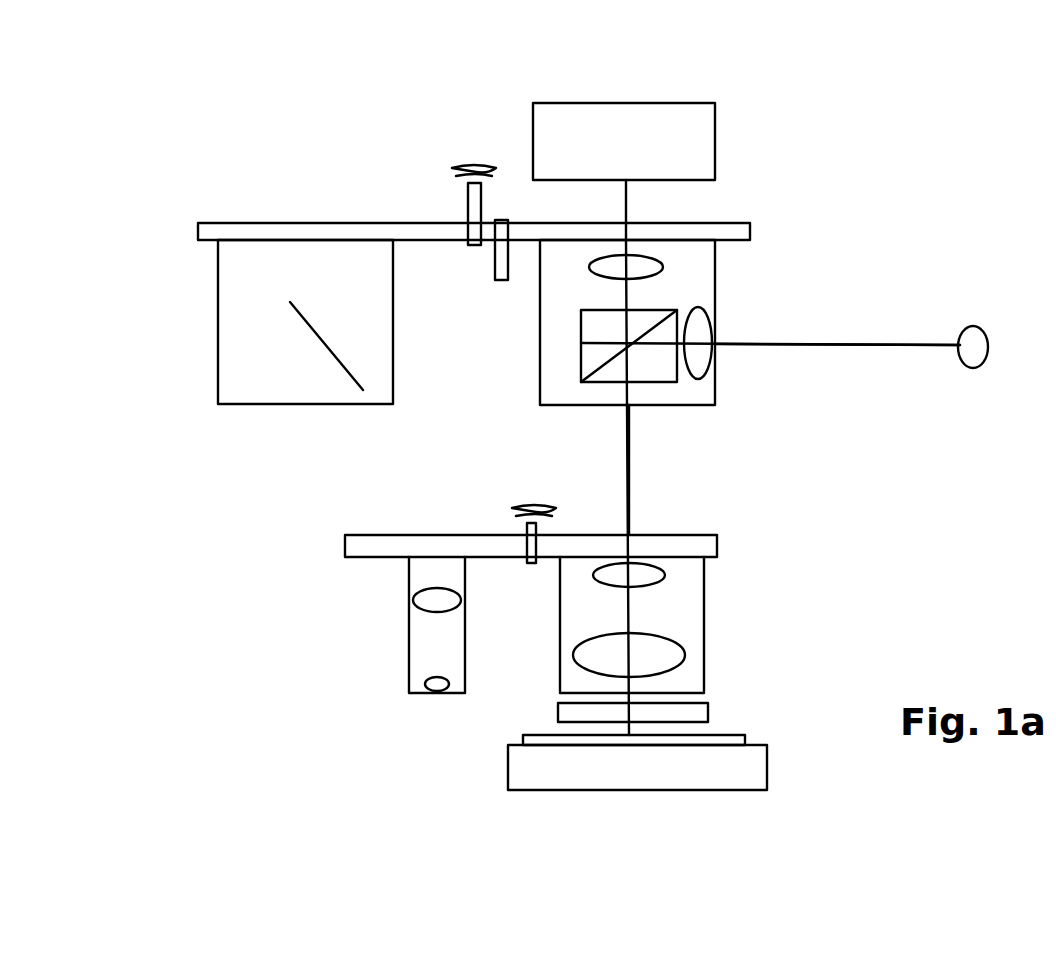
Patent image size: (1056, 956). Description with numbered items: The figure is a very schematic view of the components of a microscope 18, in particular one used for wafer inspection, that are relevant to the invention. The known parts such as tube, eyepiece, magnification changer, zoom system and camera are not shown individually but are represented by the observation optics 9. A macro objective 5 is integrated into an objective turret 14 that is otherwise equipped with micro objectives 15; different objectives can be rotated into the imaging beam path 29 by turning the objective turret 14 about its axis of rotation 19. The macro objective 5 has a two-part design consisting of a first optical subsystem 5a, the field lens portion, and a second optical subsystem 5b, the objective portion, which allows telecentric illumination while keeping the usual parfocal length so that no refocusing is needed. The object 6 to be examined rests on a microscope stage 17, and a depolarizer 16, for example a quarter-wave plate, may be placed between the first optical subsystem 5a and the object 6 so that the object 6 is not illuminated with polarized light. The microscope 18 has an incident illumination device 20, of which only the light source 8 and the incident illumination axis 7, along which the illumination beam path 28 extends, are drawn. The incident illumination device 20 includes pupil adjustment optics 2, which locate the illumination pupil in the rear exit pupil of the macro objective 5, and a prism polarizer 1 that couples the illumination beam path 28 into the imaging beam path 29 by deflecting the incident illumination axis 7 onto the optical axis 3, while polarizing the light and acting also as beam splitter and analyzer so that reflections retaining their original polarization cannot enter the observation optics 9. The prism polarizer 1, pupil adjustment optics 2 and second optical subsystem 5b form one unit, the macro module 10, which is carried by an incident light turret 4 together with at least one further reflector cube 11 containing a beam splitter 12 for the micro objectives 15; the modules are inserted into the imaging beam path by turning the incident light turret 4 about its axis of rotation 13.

The prism polarizer 1 is at (582, 344).
The pupil adjustment optics 2 is at (700, 322).
The optical axis 3 is at (630, 450).
The incident light turret 4 is at (745, 226).
The macro objective 5 is at (740, 580).
The first optical subsystem 5a is at (692, 612).
The second optical subsystem 5b is at (648, 262).
The object 6 is at (525, 735).
The incident illumination axis 7 is at (843, 346).
The light source 8 is at (986, 335).
The observation optics 9 is at (633, 160).
The macro module 10 is at (552, 405).
The reflector cube 11 is at (238, 405).
The beam splitter 12 is at (313, 338).
The axis of rotation 13 is at (469, 201).
The objective turret 14 is at (346, 545).
The micro objectives 15 is at (411, 650).
The depolarizer 16 is at (710, 712).
The microscope stage 17 is at (511, 776).
The microscope 18 is at (828, 505).
The axis of rotation 19 is at (518, 532).
The incident illumination device 20 is at (868, 316).
The illumination beam path 28 is at (737, 346).
The imaging beam path 29 is at (626, 210).